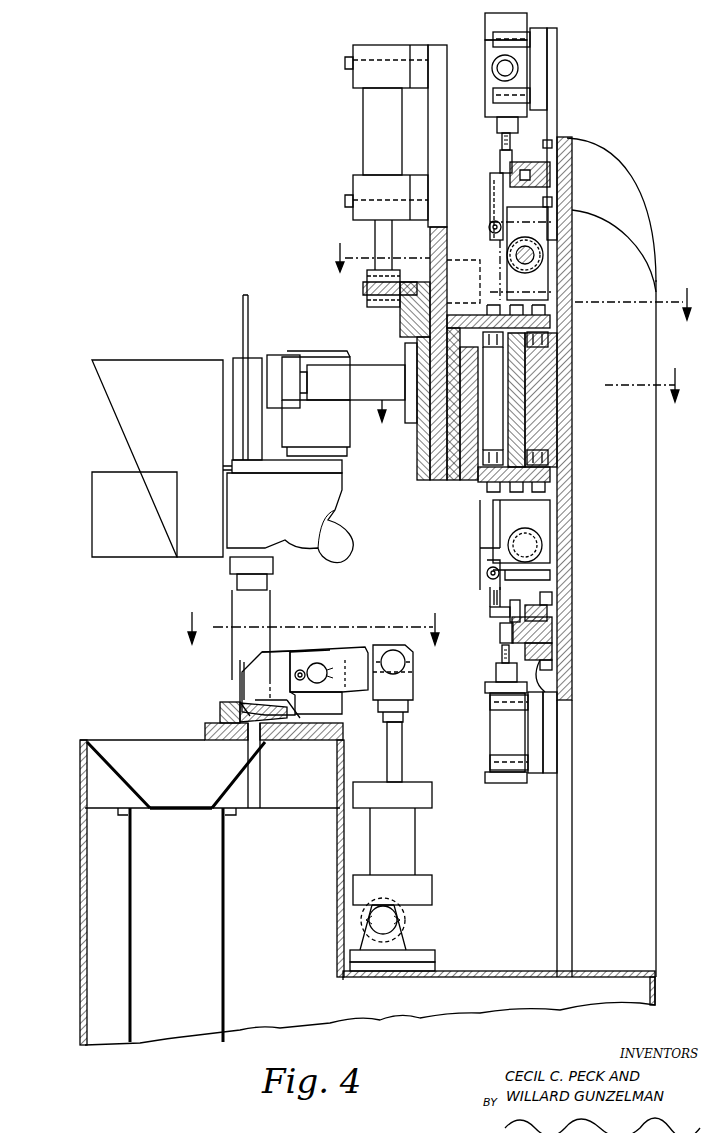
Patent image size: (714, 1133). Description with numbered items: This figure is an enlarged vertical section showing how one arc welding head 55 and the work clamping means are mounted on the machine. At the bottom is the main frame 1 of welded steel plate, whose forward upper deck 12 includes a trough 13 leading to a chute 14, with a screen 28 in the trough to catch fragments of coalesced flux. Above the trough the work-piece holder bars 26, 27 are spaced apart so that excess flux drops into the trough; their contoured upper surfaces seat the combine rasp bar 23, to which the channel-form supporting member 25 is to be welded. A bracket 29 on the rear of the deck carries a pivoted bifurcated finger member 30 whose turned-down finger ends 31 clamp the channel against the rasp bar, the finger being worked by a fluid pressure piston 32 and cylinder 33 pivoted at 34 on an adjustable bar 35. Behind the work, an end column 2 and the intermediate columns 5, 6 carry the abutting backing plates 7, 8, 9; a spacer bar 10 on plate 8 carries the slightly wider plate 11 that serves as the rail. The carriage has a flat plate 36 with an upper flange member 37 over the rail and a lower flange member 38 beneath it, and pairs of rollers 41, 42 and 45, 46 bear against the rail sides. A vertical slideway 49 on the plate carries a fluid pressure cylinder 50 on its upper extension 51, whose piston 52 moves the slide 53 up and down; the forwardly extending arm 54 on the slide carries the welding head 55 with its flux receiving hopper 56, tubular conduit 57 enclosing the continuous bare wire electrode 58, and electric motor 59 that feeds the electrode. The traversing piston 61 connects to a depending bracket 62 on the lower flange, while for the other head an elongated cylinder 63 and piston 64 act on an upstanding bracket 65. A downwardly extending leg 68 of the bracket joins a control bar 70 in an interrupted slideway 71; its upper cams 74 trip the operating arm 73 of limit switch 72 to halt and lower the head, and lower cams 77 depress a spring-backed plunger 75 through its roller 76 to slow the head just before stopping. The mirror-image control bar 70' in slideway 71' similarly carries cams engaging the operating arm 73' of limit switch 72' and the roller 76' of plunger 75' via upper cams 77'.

The main frame 1 is at (82, 911).
The end column 2 is at (658, 740).
The intermediate column 5 is at (637, 211).
The intermediate column 6 is at (528, 401).
The backing plate 7 is at (584, 269).
The intermediate backing plate 8 is at (583, 406).
The lower backing plate 9 is at (572, 561).
The spacer bar 10 is at (545, 424).
The plate (rail) 11 is at (520, 392).
The forward upper deck 12 is at (126, 740).
The trough 13 is at (133, 786).
The chute 14 is at (133, 913).
The combine rasp bar 23 is at (220, 712).
The channel-form supporting member 25 is at (240, 699).
The work-piece holder bar 26 is at (220, 718).
The work-piece holder bar 27 is at (283, 741).
The screen 28 is at (178, 812).
The bracket 29 is at (335, 650).
The bifurcated finger member 30 is at (300, 652).
The finger end 31 is at (240, 684).
The fluid pressure piston 32 is at (396, 735).
The cylinder 33 is at (393, 838).
The pivot 34 is at (395, 917).
The bar 35 is at (422, 962).
The flat plate 36 is at (476, 484).
The upper flange member 37 is at (548, 323).
The lower flange member 38 is at (488, 493).
The roller 41 is at (549, 340).
The roller 42 is at (495, 348).
The roller 45 is at (549, 458).
The roller 46 is at (491, 398).
The vertical slideway 49 is at (433, 482).
The fluid pressure cylinder 50 is at (366, 116).
The upper extension 51 is at (437, 92).
The piston 52 is at (380, 242).
The slide 53 is at (417, 456).
The forwardly extending arm 54 is at (368, 365).
The arc welding head 55 is at (318, 505).
The flux receiving hopper 56 is at (118, 404).
The tubular conduit 57 is at (235, 590).
The continuous bare wire electrode 58 is at (243, 321).
The electric motor 59 is at (302, 353).
The piston 61 is at (530, 545).
The depending bracket 62 is at (541, 521).
The elongated cylinder 63 is at (545, 262).
The piston 64 is at (534, 250).
The upstanding bracket 65 is at (531, 291).
The downwardly extending leg 68 is at (525, 602).
The control bar 70 is at (559, 643).
The control bar 70' is at (566, 155).
The interrupted slideway 71 is at (562, 716).
The slideway 71' is at (556, 134).
The limit switch 72 is at (472, 545).
The limit switch 72' is at (475, 214).
The operating arm 73 is at (472, 596).
The operating arm 73' is at (476, 206).
The upper cam 74 is at (490, 613).
The spring-backed plunger 75 is at (488, 723).
The spring-backed plunger 75' is at (489, 73).
The roller 76 is at (482, 659).
The roller 76' is at (479, 141).
The lower cam 77 is at (484, 637).
The upper cam 77' is at (480, 161).